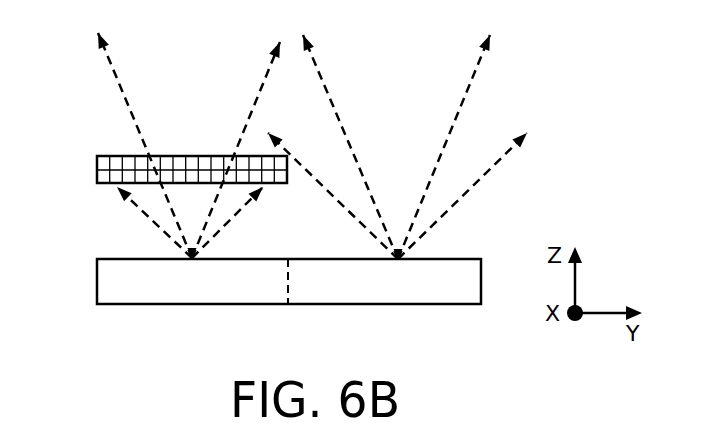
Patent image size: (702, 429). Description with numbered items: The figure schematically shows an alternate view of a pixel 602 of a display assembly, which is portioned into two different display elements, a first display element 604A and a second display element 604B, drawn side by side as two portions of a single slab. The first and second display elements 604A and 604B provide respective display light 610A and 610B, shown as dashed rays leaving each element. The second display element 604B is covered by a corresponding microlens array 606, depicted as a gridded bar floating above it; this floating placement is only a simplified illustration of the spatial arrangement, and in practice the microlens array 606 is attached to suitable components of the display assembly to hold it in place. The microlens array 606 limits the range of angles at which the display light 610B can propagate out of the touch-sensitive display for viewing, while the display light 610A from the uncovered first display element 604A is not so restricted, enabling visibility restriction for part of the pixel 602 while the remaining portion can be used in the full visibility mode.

The pixel 602 is at (492, 122).
The first display element 604A is at (438, 259).
The second display element 604B is at (130, 304).
The microlens array 606 is at (115, 156).
The display light 610A is at (342, 248).
The display light 610B is at (128, 246).